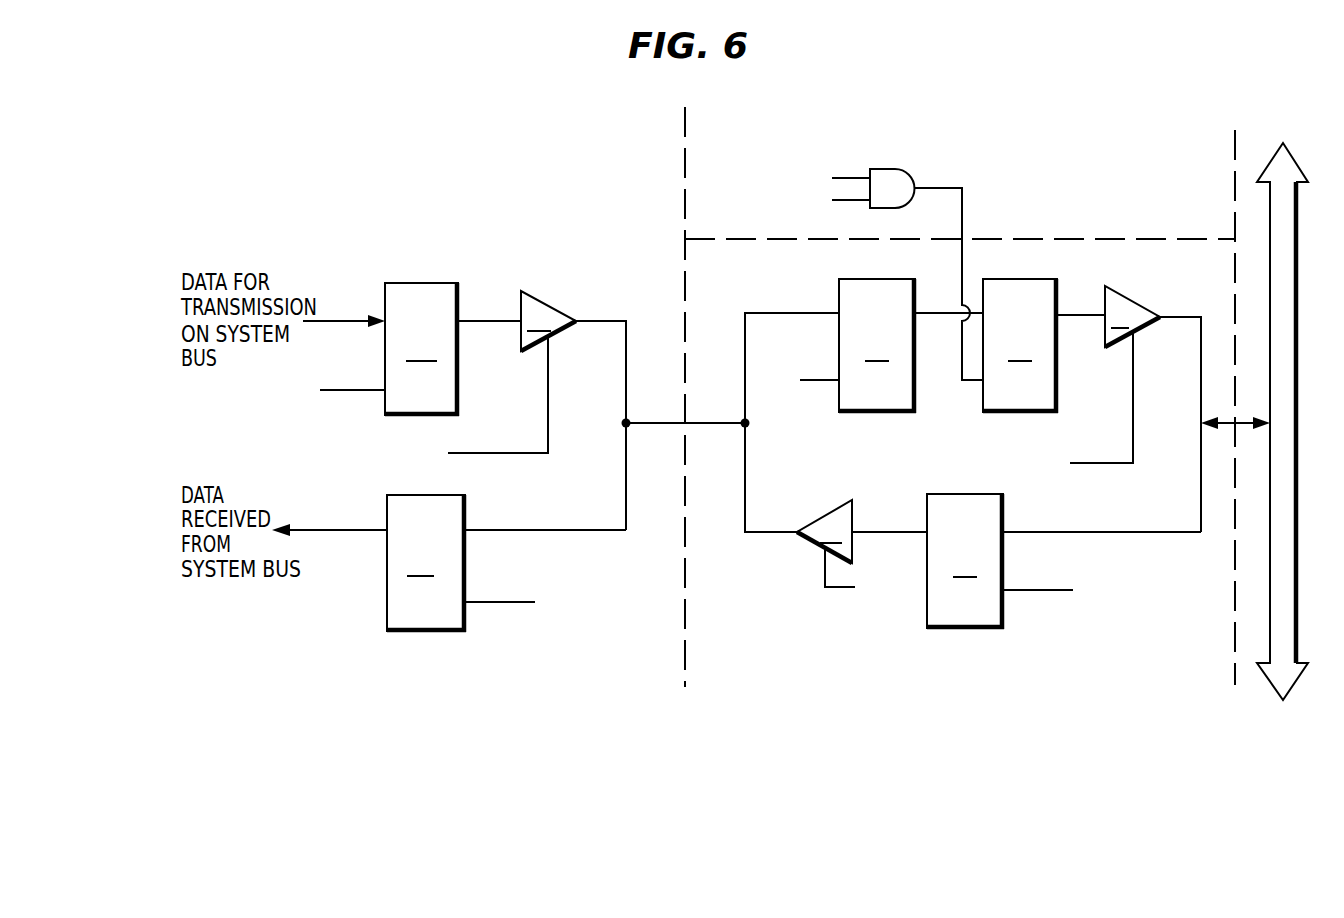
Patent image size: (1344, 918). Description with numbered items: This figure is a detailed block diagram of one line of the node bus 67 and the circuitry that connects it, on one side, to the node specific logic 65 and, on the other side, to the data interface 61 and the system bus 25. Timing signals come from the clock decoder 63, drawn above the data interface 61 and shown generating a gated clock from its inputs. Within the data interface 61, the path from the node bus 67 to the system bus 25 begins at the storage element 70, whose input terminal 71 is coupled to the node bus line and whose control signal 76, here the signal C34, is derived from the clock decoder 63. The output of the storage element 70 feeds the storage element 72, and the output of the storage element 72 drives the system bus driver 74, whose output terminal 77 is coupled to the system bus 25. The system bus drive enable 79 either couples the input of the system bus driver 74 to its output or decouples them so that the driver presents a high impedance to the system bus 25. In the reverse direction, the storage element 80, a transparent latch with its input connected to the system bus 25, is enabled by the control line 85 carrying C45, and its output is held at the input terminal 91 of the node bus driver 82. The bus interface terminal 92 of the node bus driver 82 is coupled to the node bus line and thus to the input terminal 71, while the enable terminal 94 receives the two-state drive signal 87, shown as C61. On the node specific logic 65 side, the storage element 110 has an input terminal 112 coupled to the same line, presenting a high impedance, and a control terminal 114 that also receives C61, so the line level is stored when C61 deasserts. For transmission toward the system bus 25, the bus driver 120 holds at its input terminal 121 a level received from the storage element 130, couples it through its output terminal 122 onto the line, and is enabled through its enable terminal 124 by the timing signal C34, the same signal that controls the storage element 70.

The system bus 25 is at (1298, 604).
The data interface 61 is at (1043, 415).
The clock decoder 63 is at (960, 232).
The node specific logic 65 is at (519, 397).
The node bus 67 is at (667, 423).
The storage element 70 is at (864, 351).
The input terminal 71 is at (839, 308).
The storage element 72 is at (1044, 346).
The system bus driver 74 is at (1111, 409).
The node bus control signal 76 is at (839, 383).
The output terminal 77 is at (1160, 316).
The system bus drive enable 79 is at (1118, 463).
The storage element 80 is at (1064, 561).
The node bus driver 82 is at (836, 511).
The system bus control signal 85 is at (1040, 591).
The node bus drive signal 87 is at (844, 588).
The input terminal 91 is at (852, 522).
The bus interface terminal 92 is at (797, 534).
The enable terminal 94 is at (822, 551).
The storage element 110 is at (449, 563).
The input terminal 112 is at (465, 530).
The control terminal 114 is at (480, 602).
The bus driver 120 is at (537, 410).
The input terminal 121 is at (521, 302).
The output terminal 122 is at (575, 321).
The enable terminal 124 is at (548, 337).
The storage element 130 is at (381, 374).